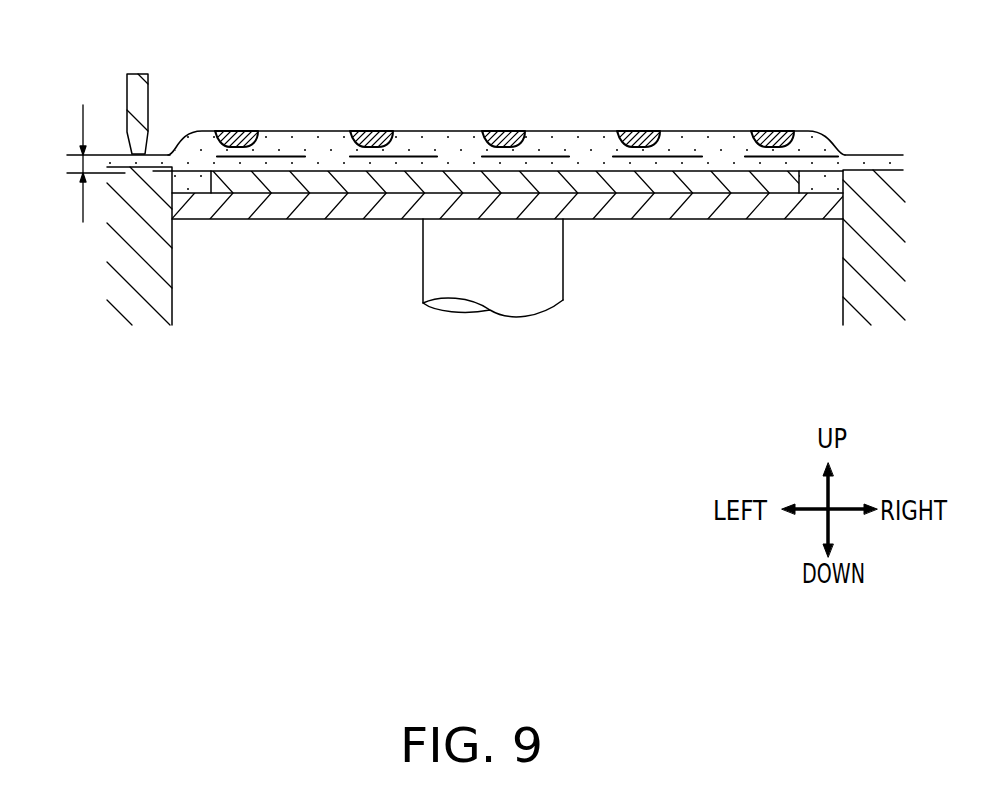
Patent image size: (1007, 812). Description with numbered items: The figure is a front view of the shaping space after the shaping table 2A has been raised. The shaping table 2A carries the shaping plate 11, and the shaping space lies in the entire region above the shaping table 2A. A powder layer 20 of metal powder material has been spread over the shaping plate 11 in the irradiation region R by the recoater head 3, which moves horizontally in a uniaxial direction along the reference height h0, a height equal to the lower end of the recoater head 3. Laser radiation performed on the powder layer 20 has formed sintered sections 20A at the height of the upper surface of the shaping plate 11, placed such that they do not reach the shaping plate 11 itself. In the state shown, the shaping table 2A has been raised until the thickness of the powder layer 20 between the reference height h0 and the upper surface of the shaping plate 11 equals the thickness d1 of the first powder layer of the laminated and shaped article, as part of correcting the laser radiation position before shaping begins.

The recoater head 3 is at (138, 82).
The powder layer 20 is at (445, 138).
The sintered section 20A is at (245, 131).
The shaping plate 11 is at (625, 185).
The shaping table 2A is at (357, 212).
The reference height h0 is at (501, 155).
The thickness of the first powder layer d1 is at (83, 167).
The irradiation region R is at (748, 85).